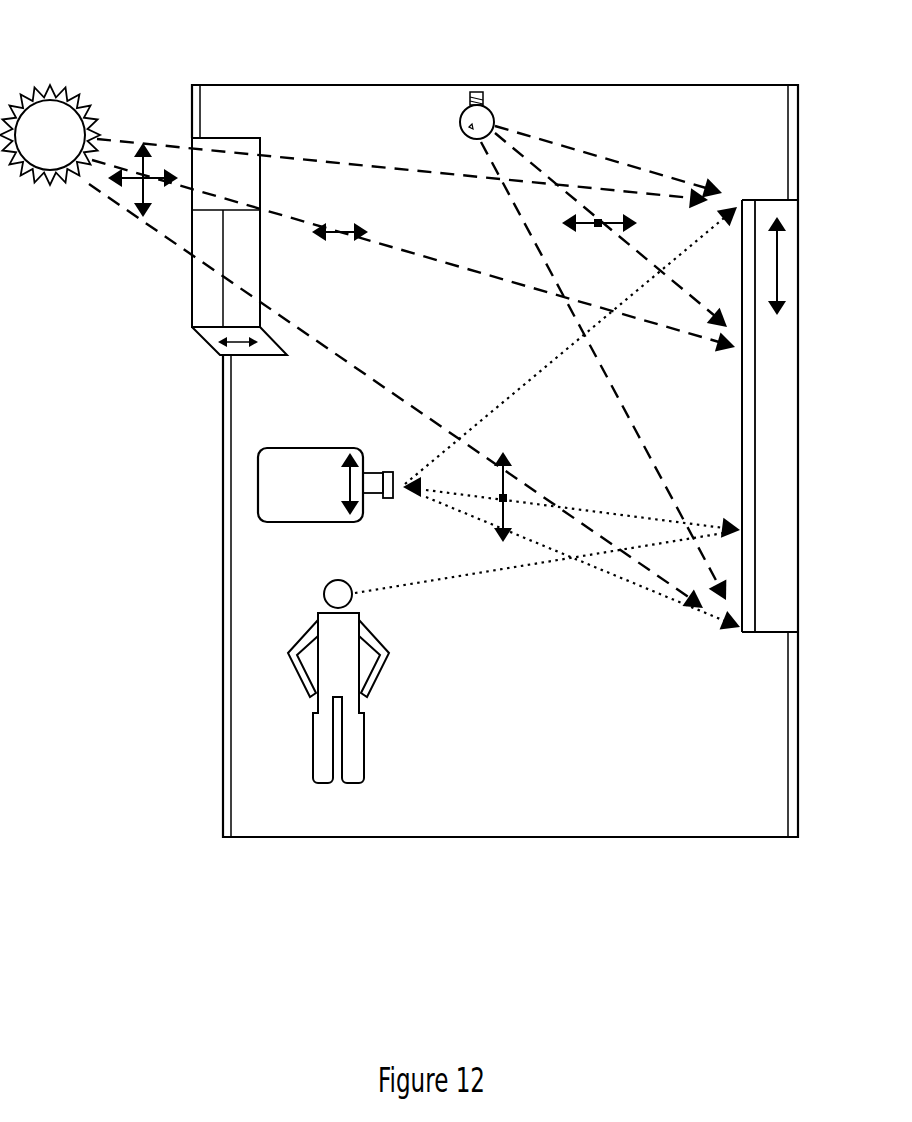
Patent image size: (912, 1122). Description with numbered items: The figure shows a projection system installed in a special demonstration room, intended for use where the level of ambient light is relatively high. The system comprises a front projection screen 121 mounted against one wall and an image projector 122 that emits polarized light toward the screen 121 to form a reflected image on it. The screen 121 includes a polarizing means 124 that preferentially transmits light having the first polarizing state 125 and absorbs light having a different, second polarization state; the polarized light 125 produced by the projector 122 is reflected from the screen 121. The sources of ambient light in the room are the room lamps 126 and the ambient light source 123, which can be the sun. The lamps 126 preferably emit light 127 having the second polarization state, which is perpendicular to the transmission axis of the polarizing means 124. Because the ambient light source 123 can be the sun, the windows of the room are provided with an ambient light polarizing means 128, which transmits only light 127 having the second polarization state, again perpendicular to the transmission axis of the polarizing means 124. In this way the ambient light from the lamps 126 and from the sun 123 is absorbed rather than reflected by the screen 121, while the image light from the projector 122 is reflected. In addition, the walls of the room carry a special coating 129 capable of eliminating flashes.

The front projection screen 121 is at (777, 597).
The image projector 122 is at (339, 485).
The ambient light source 123 is at (58, 120).
The polarizing means 124 is at (747, 610).
The polarized light of first polarization state 125 is at (503, 498).
The room lamps 126 is at (485, 117).
The light having the second polarization state 127 is at (340, 232).
The ambient light polarizing means 128 is at (212, 335).
The special coating 129 is at (227, 709).